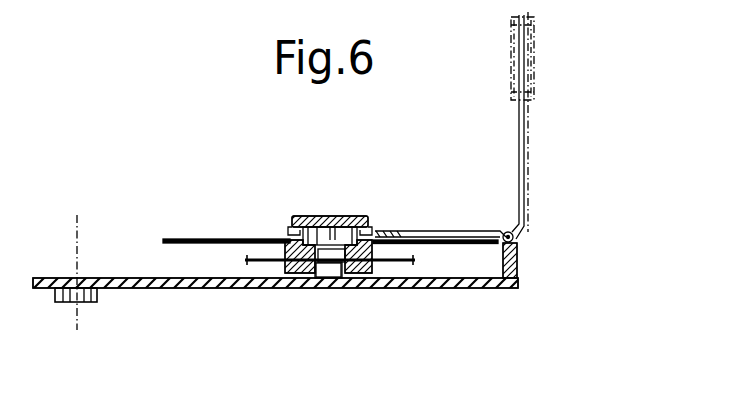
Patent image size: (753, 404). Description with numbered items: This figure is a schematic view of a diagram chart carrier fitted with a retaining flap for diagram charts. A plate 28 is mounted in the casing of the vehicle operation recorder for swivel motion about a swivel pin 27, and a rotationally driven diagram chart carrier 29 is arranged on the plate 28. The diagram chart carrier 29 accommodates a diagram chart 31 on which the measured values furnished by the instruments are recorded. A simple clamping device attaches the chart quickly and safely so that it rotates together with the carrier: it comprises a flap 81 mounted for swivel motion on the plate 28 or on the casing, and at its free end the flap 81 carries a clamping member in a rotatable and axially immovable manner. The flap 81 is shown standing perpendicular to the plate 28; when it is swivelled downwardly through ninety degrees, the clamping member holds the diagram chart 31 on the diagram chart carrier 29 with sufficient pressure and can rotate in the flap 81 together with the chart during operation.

The swivel pin 27 is at (78, 234).
The plate 28 is at (182, 289).
The diagram chart carrier 29 is at (297, 289).
The diagram chart 31 is at (195, 238).
The flap 81 is at (517, 133).